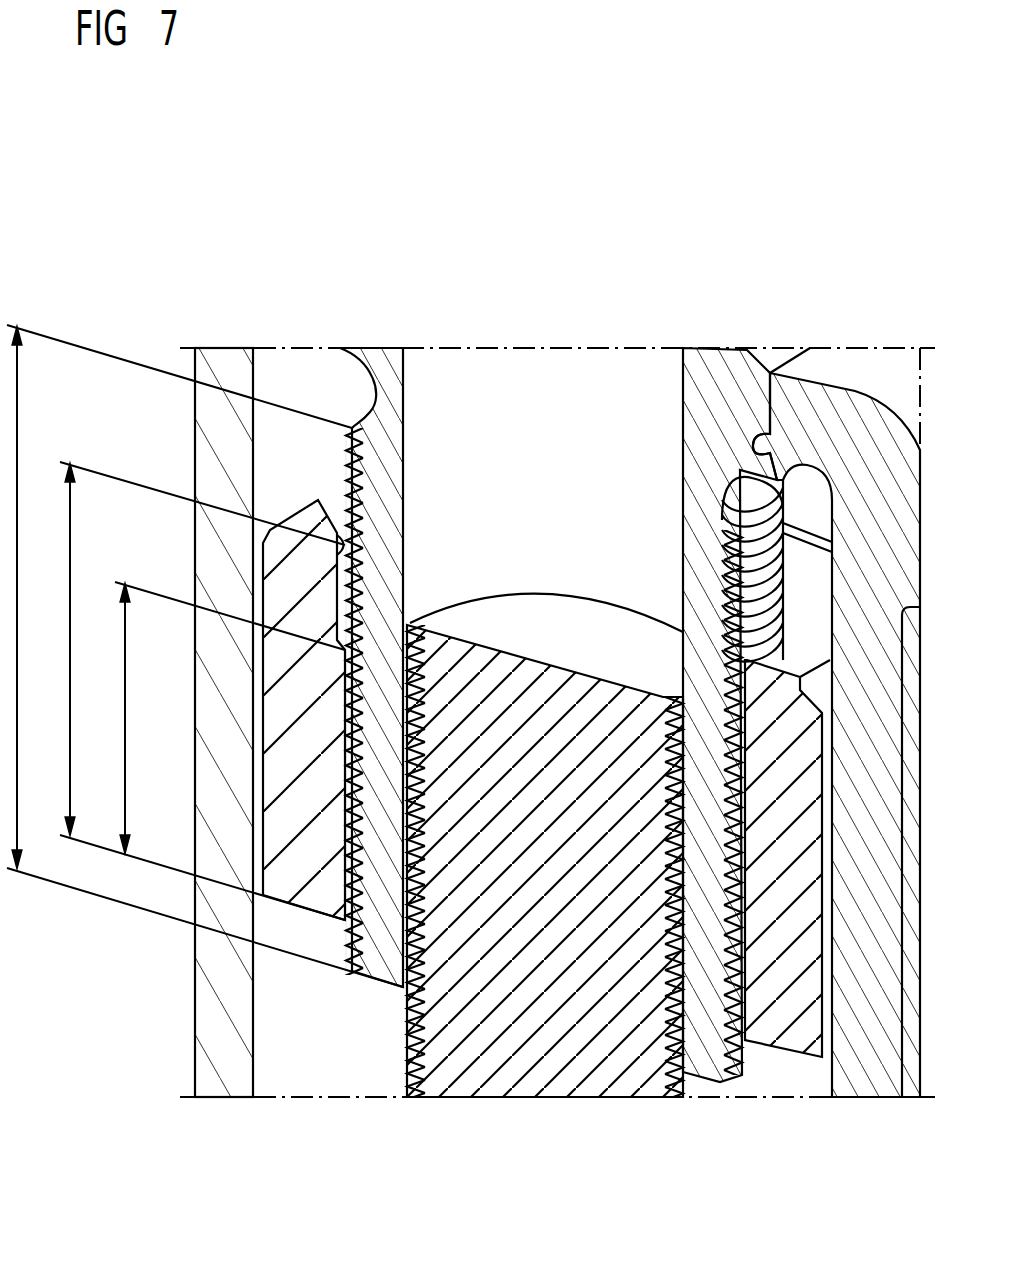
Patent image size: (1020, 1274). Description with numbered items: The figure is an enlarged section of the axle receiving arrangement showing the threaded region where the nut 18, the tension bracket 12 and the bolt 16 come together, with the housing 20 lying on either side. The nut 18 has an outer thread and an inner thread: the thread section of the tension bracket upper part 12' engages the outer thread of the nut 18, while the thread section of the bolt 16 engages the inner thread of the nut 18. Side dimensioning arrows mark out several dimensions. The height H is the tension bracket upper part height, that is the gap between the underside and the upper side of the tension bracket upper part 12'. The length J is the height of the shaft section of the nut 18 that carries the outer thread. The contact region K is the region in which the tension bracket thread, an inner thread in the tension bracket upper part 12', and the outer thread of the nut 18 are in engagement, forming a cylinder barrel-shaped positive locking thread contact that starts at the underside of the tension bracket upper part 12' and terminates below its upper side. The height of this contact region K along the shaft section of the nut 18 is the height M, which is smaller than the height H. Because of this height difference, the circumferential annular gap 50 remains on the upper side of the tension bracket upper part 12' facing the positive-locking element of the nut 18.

The tension bracket 12 is at (787, 917).
The tension bracket upper part 12' is at (235, 710).
The bolt 16 is at (593, 1048).
The nut 18 is at (383, 362).
The housing 20 is at (232, 455).
The circumferential annular gap 50 is at (343, 545).
The contact region K is at (365, 806).
The length of the shaft section of the nut J is at (204, 656).
The tension bracket upper part height H is at (201, 691).
The height of the contact region M is at (228, 718).